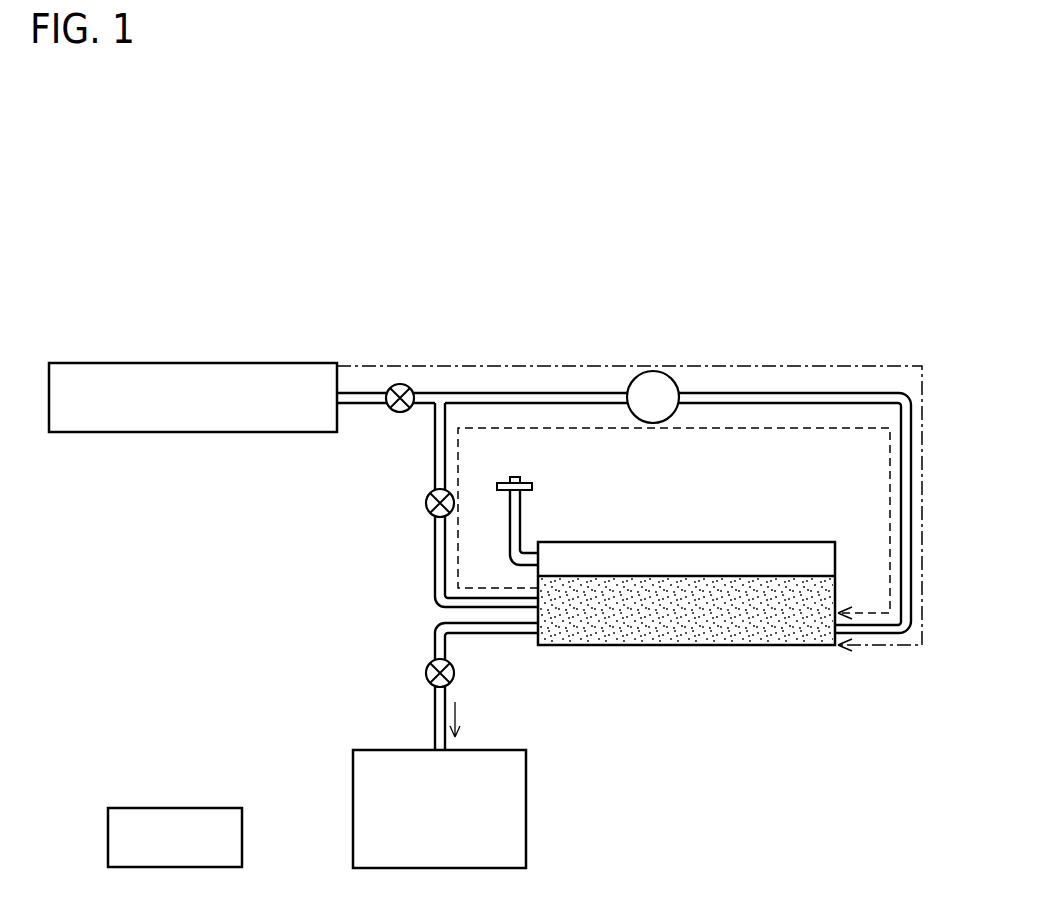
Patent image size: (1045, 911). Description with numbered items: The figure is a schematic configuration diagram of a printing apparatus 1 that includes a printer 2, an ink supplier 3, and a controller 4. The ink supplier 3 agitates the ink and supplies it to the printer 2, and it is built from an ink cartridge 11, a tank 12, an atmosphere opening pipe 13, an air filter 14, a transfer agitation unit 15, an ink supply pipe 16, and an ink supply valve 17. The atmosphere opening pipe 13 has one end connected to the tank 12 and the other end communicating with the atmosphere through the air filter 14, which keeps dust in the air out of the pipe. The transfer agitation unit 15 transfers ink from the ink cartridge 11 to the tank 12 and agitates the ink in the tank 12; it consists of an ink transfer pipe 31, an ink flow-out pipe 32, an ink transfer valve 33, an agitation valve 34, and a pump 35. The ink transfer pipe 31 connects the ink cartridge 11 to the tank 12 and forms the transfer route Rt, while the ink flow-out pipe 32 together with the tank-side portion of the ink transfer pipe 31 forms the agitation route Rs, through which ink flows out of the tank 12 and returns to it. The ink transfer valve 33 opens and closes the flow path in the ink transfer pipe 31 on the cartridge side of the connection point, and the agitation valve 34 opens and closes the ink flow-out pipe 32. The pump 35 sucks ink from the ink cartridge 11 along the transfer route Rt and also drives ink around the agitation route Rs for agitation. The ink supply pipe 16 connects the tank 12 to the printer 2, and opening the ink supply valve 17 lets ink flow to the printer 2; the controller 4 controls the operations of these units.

The printing apparatus 1 is at (816, 257).
The printer 2 is at (527, 808).
The ink supplier 3 is at (569, 340).
The controller 4 is at (174, 807).
The ink cartridge 11 is at (193, 433).
The tank 12 is at (690, 647).
The atmosphere opening pipe 13 is at (523, 516).
The air filter 14 is at (535, 487).
The transfer agitation unit 15 is at (849, 357).
The ink supply pipe 16 is at (433, 722).
The ink supply valve 17 is at (424, 676).
The ink transfer pipe 31 is at (512, 391).
The ink flow-out pipe 32 is at (434, 563).
The ink transfer valve 33 is at (399, 383).
The agitation valve 34 is at (424, 503).
The pump 35 is at (680, 378).
The transfer route Rt is at (790, 365).
The agitation route Rs is at (888, 484).